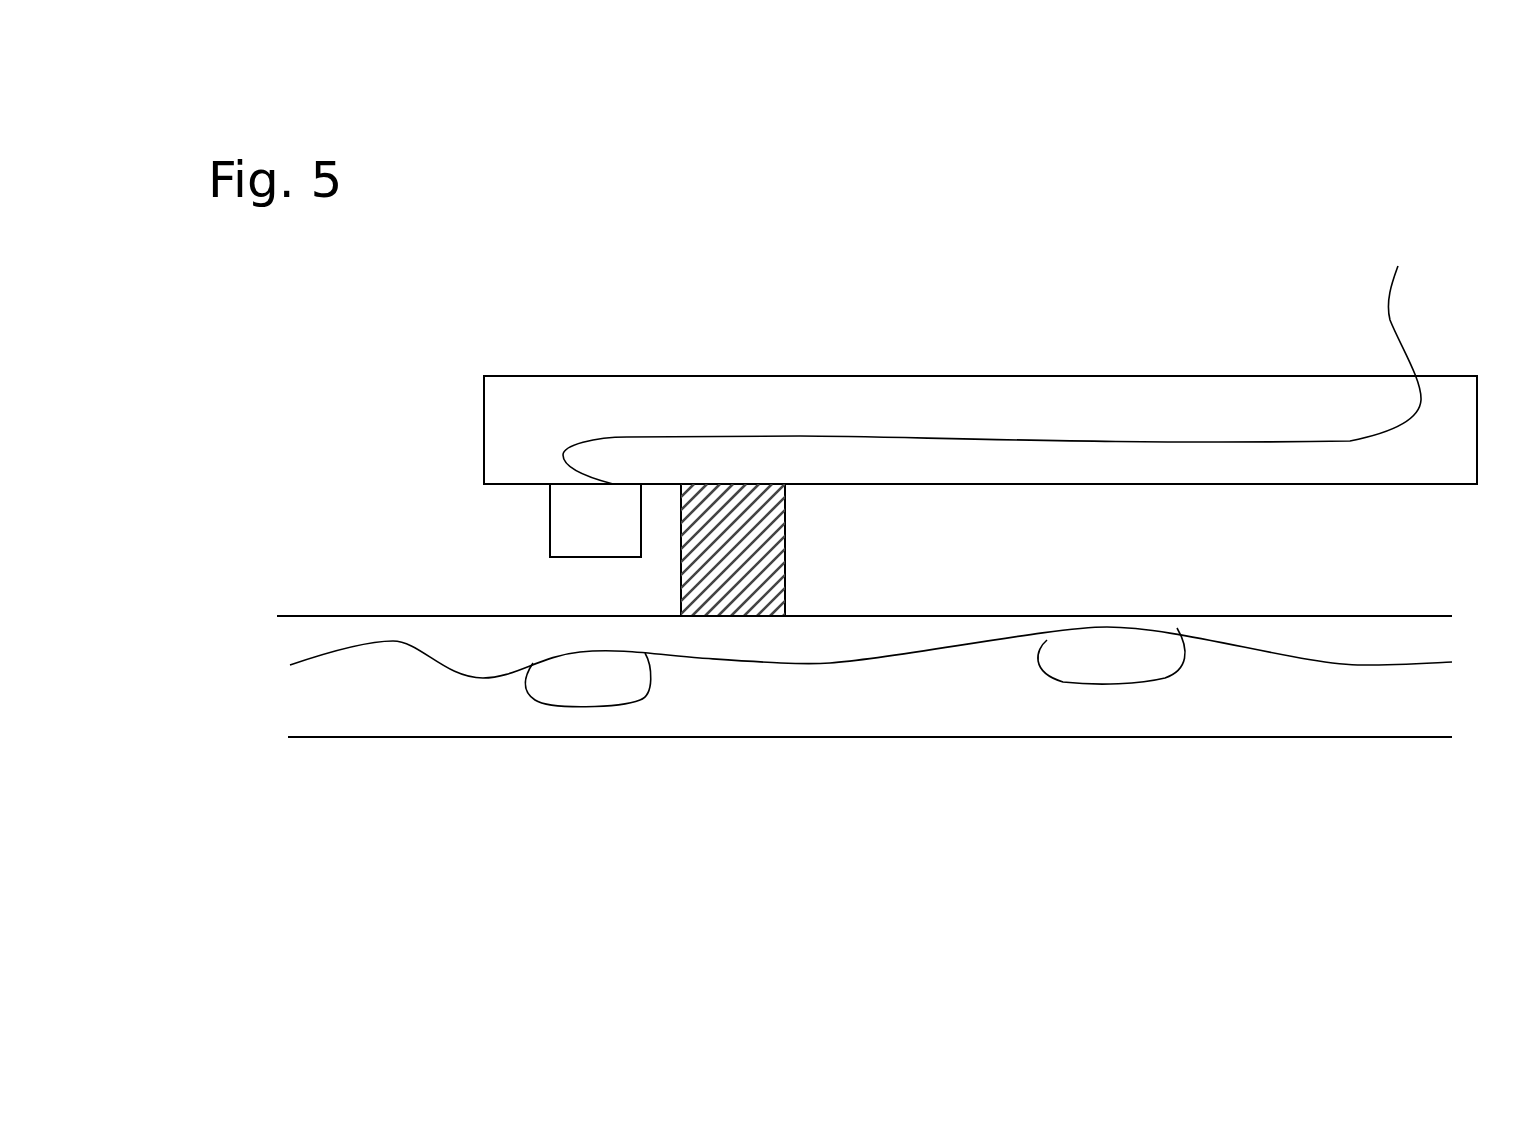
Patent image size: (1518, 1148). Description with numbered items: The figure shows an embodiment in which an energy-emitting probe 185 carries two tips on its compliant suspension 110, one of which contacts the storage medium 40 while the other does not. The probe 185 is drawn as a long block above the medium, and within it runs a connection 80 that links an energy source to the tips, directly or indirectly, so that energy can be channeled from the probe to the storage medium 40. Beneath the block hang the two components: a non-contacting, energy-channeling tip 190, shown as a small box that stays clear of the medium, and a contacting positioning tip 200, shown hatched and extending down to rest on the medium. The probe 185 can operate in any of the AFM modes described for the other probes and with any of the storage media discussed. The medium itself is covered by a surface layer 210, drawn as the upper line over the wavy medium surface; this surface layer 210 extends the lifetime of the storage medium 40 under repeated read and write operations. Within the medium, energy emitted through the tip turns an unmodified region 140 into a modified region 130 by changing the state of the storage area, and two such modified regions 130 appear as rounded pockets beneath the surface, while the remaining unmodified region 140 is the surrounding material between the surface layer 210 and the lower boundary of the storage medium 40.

The storage medium 40 is at (1229, 687).
The connection 80 is at (955, 435).
The compliant suspension 110 is at (602, 400).
The modified region 130 is at (855, 753).
The unmodified region 140 is at (871, 766).
The energy-emitting probe 185 is at (445, 401).
The non-contacting energy-channeling tip 190 is at (590, 533).
The contacting positioning tip 200 is at (785, 519).
The surface layer 210 is at (317, 642).